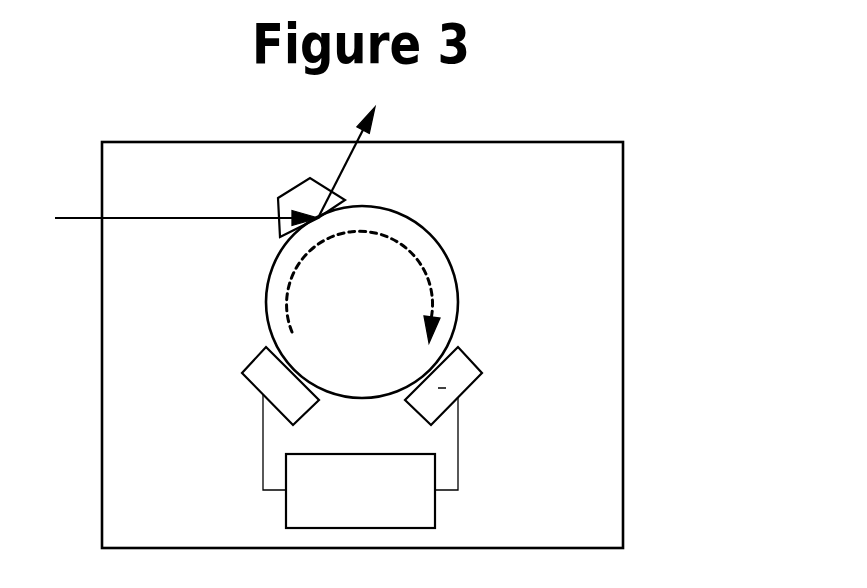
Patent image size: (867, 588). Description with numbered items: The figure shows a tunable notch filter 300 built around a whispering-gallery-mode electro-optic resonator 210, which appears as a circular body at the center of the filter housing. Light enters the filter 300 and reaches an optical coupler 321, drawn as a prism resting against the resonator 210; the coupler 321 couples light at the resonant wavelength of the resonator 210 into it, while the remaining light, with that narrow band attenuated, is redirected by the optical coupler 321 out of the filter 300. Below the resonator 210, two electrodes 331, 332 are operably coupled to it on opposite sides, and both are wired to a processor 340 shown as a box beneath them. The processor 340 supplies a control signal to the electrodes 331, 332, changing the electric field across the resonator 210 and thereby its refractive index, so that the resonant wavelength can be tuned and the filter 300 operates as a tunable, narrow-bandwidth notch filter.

The filter 300 is at (428, 320).
The electro-optic resonator 210 is at (415, 294).
The optical coupler 321 is at (215, 164).
The electrode 331 is at (218, 403).
The electrode 332 is at (506, 404).
The processor 340 is at (360, 491).